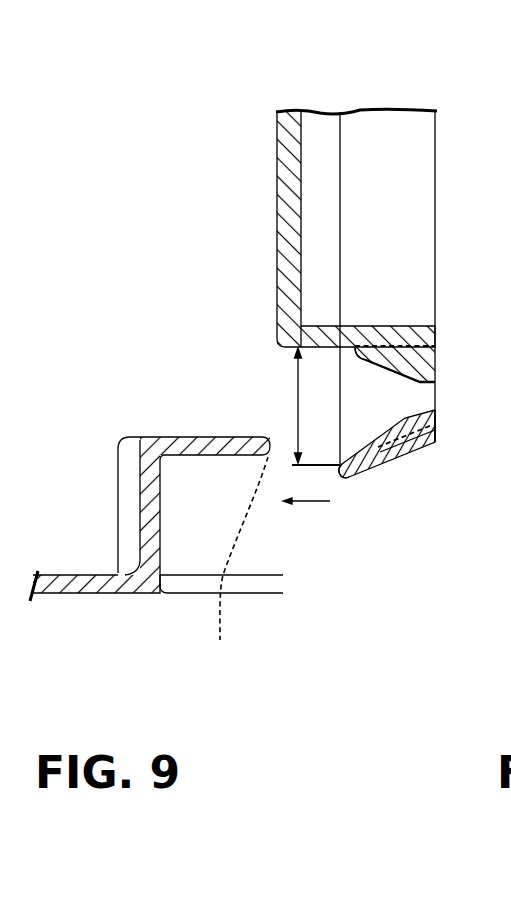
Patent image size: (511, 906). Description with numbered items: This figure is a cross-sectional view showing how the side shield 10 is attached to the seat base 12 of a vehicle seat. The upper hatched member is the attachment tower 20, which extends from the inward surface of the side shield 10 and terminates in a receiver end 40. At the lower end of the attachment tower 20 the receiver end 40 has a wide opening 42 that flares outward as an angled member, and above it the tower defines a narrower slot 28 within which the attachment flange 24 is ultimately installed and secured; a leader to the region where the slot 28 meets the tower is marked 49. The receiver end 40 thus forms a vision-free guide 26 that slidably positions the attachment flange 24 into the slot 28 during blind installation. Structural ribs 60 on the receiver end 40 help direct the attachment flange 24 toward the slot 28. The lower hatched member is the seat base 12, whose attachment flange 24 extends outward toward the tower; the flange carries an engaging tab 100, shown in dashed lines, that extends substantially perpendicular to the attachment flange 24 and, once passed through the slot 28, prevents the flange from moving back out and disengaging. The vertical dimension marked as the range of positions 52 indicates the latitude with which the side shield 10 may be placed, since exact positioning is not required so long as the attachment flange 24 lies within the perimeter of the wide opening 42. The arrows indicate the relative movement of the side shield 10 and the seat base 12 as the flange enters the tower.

The side shield 10 is at (388, 78).
The attachment tower 20 is at (266, 152).
The slot 28 is at (437, 382).
The flange transition 49 is at (360, 330).
The guide 26 is at (392, 402).
The structural ribs 60 is at (437, 437).
The receiver end 40 is at (415, 472).
The wide opening 42 is at (343, 478).
The range of positions 52 is at (297, 396).
The attachment flange 24 is at (207, 429).
The seat base 12 is at (127, 616).
The engaging tab 100 is at (235, 563).